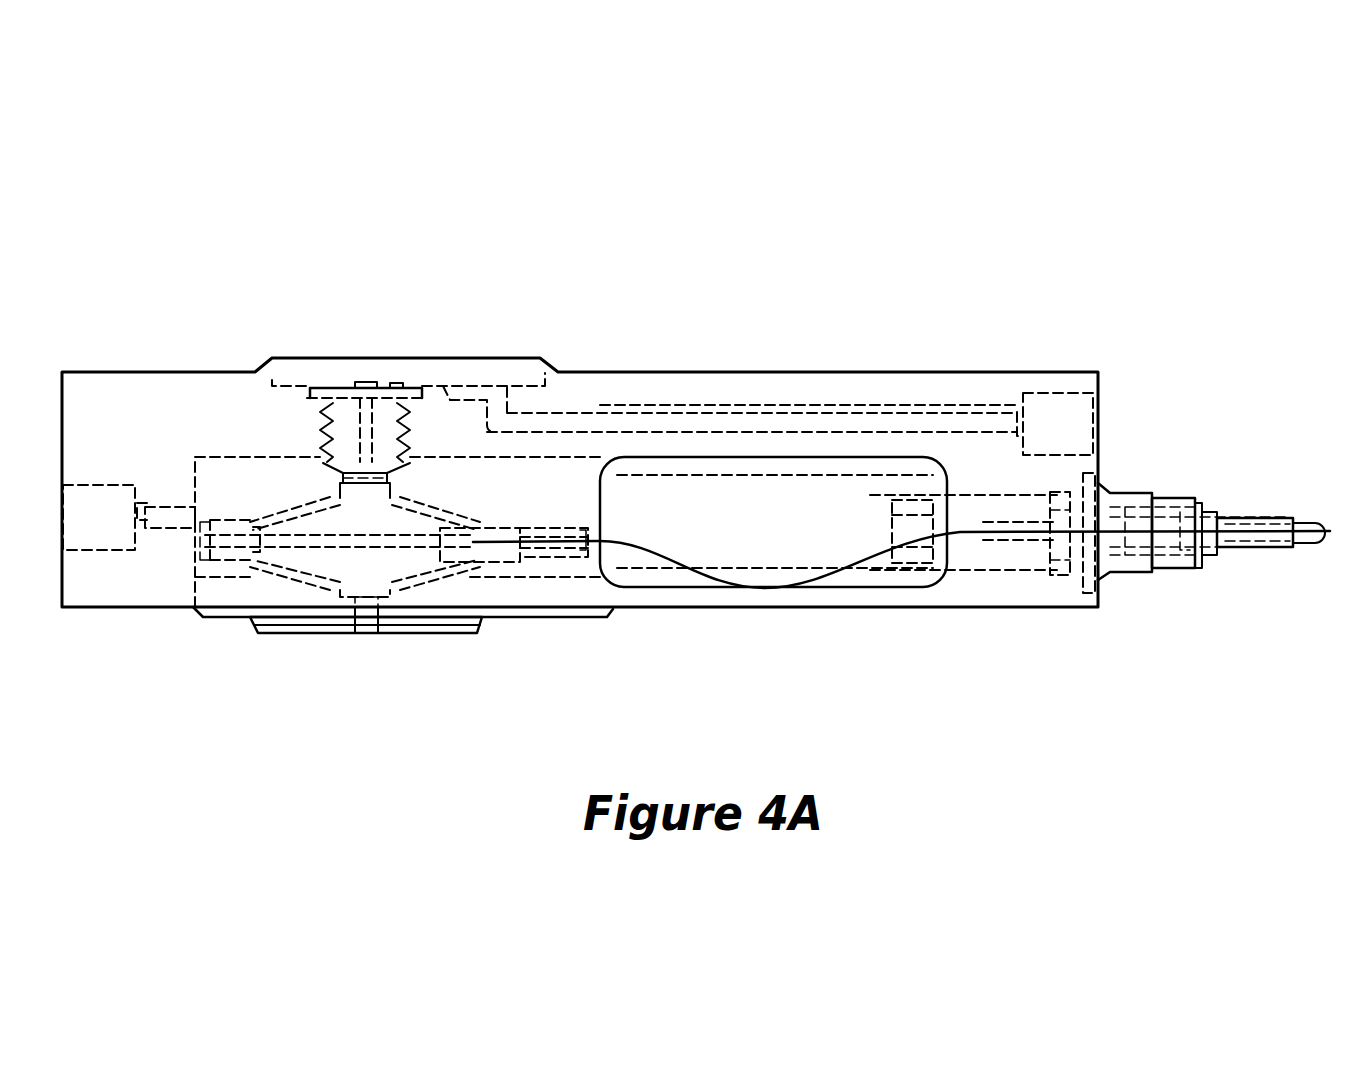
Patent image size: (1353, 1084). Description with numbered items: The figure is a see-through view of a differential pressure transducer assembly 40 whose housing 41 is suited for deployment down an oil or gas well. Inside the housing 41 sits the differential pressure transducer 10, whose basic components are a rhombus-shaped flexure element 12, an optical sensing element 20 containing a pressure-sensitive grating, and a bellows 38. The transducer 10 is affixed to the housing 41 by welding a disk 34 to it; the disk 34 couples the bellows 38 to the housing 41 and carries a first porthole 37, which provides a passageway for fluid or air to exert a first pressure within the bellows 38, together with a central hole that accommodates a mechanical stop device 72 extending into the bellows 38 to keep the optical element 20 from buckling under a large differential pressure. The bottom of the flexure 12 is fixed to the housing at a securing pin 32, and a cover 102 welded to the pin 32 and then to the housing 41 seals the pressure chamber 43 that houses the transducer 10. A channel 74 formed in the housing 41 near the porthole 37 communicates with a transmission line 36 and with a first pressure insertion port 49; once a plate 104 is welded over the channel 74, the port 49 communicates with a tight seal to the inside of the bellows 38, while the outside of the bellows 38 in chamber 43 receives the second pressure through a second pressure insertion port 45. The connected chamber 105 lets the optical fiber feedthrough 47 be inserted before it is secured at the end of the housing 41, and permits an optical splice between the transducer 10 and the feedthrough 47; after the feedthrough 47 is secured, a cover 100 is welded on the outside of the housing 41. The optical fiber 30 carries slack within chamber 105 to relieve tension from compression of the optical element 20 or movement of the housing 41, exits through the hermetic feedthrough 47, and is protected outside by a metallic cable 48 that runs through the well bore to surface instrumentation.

The differential pressure transducer 10 is at (181, 466).
The flexure element 12 is at (283, 503).
The optical sensing element 20 is at (413, 542).
The optical fiber 30 is at (820, 575).
The securing pin 32 is at (370, 625).
The disk 34 is at (320, 387).
The transmission line 36 is at (620, 423).
The first porthole 37 is at (407, 432).
The bellows 38 is at (437, 393).
The housing 40 is at (968, 258).
The housing 41 is at (780, 373).
The chamber 43 is at (540, 567).
The second pressure insertion port 45 is at (93, 520).
The optical fiber feedthrough 47 is at (1108, 533).
The metallic cable 48 is at (1317, 543).
The first pressure insertion port 49 is at (1067, 430).
The mechanical stop device 72 is at (367, 432).
The channel 74 is at (490, 383).
The cover 100 is at (887, 590).
The cover 102 is at (266, 636).
The plate 104 is at (535, 367).
The chamber 105 is at (708, 523).